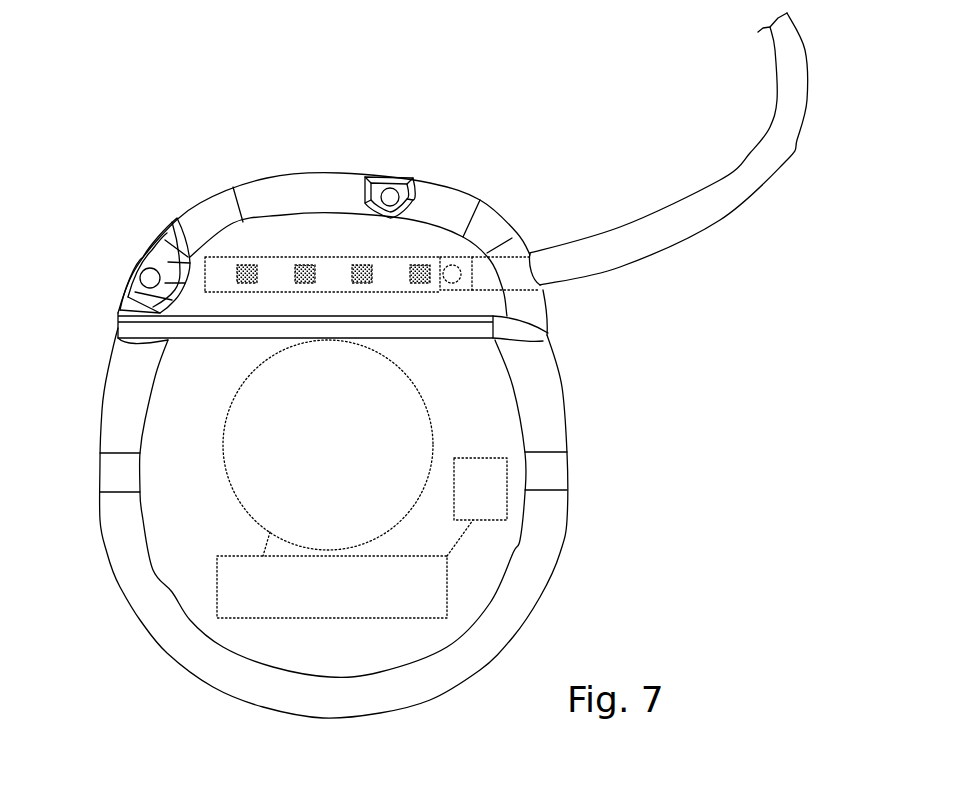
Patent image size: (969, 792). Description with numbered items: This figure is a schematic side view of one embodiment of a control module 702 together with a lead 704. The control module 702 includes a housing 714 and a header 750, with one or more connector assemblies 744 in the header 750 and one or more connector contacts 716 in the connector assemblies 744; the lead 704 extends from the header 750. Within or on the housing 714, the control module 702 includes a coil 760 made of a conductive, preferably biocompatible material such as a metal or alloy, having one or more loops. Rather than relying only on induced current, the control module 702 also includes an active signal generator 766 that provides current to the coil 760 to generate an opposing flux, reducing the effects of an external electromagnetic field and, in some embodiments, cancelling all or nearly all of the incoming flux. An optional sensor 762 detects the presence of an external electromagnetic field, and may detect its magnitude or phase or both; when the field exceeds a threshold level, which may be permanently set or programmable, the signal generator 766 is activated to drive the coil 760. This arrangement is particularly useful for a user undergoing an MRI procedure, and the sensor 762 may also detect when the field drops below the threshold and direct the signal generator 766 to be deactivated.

The control module 702 is at (93, 199).
The lead 704 is at (648, 237).
The housing 714 is at (543, 389).
The connector contacts 716 is at (243, 266).
The connector assemblies 744 is at (425, 257).
The header 750 is at (307, 181).
The coil 760 is at (220, 456).
The sensor 762 is at (507, 467).
The active signal generator 766 is at (233, 593).